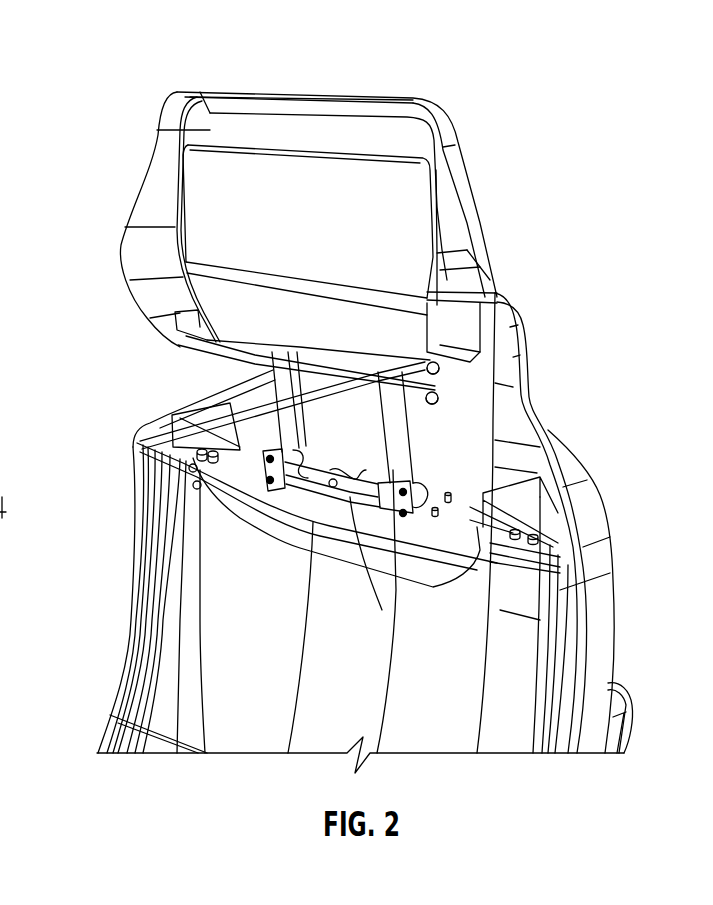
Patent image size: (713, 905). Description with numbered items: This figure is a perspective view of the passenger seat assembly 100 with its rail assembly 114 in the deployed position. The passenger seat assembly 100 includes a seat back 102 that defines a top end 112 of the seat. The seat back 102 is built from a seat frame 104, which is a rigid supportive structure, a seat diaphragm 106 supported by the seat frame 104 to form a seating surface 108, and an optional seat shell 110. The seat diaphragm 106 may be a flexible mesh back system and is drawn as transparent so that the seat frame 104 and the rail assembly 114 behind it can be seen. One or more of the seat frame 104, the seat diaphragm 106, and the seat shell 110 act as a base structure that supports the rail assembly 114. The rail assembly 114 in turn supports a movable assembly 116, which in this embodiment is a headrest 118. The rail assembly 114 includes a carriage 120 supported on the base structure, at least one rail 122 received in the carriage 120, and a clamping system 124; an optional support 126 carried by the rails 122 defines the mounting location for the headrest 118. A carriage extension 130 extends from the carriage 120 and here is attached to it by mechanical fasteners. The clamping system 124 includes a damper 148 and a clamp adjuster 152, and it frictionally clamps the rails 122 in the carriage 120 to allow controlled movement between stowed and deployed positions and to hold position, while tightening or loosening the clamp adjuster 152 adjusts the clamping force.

The passenger seat assembly 100 is at (110, 92).
The seat back 102 is at (510, 737).
The seat frame 104 is at (135, 458).
The seat diaphragm 106 is at (237, 615).
The seating surface 108 is at (208, 684).
The seat shell 110 is at (563, 480).
The top end 112 is at (497, 297).
The rail assembly 114 is at (97, 357).
The movable assembly 116 is at (222, 118).
The headrest 118 is at (340, 113).
The carriage 120 is at (313, 498).
The rail 122 is at (512, 302).
The clamping system 124 is at (297, 557).
The support 126 is at (407, 183).
The carriage extension 130 is at (447, 500).
The damper 148 is at (362, 515).
The clamp adjuster 152 is at (333, 473).